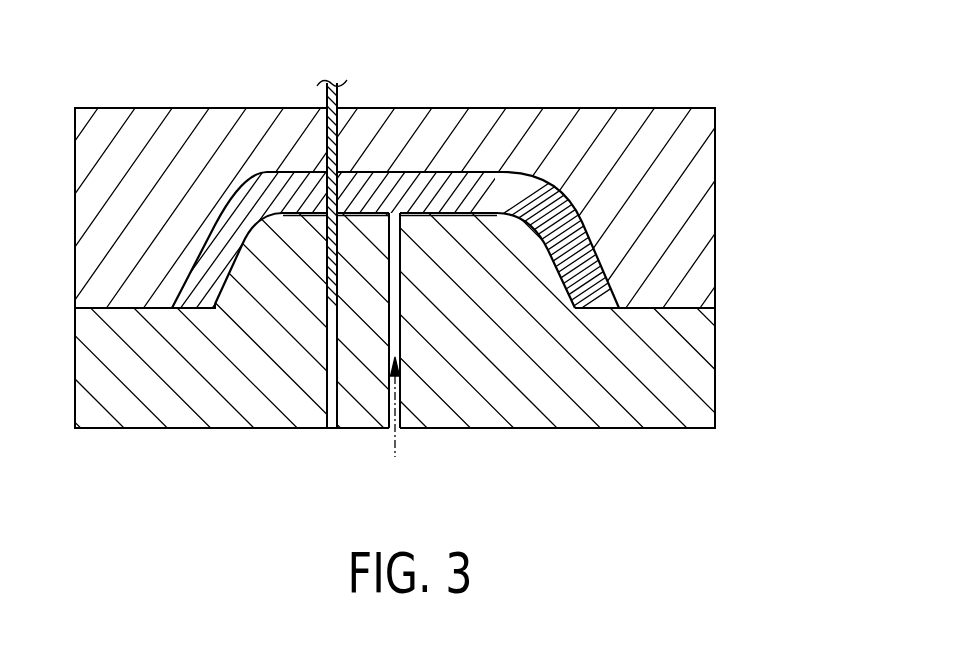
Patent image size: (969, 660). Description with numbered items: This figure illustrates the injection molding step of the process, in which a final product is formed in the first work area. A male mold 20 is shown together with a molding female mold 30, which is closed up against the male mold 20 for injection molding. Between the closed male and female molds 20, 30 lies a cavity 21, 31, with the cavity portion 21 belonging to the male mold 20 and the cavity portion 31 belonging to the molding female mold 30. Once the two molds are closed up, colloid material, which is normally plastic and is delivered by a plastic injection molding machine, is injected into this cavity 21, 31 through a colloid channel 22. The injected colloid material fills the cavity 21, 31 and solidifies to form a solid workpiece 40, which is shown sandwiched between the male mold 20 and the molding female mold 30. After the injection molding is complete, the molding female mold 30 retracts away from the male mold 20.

The male mold 20 is at (640, 406).
The cavity 21 is at (557, 270).
The colloid channel 22 is at (396, 333).
The molding female mold 30 is at (670, 114).
The cavity 31 is at (533, 177).
The solid workpiece 40 is at (417, 168).